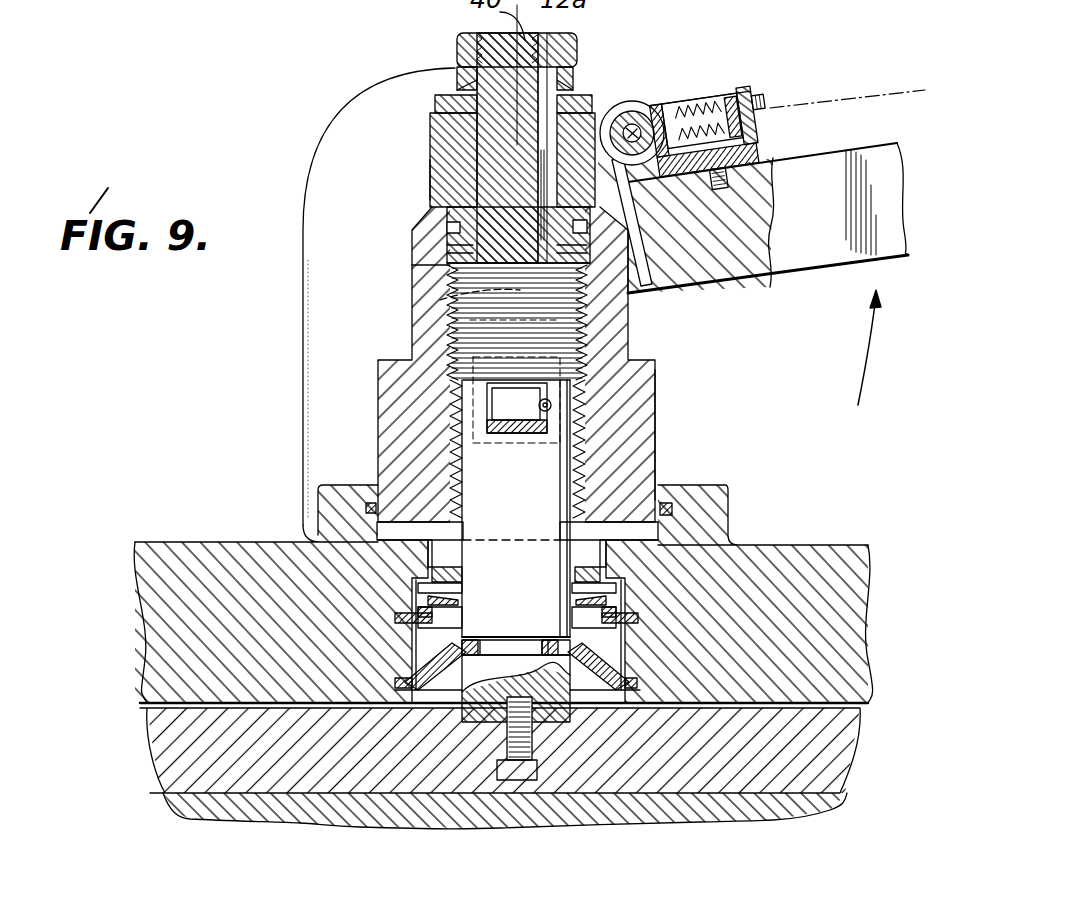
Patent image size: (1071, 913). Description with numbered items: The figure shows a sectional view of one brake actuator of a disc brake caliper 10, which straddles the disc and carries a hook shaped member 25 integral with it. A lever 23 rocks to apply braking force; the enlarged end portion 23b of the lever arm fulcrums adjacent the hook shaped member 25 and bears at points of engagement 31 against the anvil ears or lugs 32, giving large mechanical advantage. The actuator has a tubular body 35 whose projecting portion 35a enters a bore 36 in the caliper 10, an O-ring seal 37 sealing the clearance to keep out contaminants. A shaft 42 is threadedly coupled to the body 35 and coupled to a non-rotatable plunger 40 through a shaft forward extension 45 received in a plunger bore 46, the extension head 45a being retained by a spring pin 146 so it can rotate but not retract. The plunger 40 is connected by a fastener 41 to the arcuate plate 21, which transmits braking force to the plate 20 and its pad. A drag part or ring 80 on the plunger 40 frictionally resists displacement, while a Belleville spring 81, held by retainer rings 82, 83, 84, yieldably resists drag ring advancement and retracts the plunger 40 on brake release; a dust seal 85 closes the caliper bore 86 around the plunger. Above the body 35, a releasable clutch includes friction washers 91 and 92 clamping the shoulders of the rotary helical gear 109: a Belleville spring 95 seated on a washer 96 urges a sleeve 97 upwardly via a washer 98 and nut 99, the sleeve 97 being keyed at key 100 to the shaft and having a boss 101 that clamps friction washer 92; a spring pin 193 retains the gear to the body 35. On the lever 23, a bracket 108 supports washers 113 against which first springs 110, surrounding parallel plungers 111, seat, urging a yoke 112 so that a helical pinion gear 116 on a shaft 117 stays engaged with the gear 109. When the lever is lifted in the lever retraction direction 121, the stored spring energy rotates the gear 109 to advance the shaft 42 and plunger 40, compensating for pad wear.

The caliper 10 is at (200, 545).
The plate 20 is at (185, 805).
The arcuate plate 21 is at (165, 742).
The lever 23 is at (743, 268).
The enlarged end portion of lever arm 23b is at (425, 310).
The hook shaped member 25 is at (315, 288).
The points of engagement 31 is at (520, 352).
The anvil ears or lugs 32 is at (470, 415).
The tubular body 35 is at (378, 400).
The projecting portion of body 35a is at (612, 507).
The bore 36 is at (655, 530).
The O-ring seal 37 is at (672, 509).
The plunger 40 is at (516, 551).
The fastener 41 is at (532, 730).
The shaft 42 is at (465, 322).
The shaft forward extension 45 is at (500, 397).
The extension head 45a is at (512, 433).
The plunger bore 46 is at (500, 420).
The spring pin 146 is at (551, 405).
The drag part or ring 80 is at (434, 570).
The Belleville spring 81 is at (418, 612).
The retainer ring 82 is at (600, 586).
The retainer ring 83 is at (638, 618).
The retainer ring 84 is at (420, 590).
The dust seal 85 is at (600, 655).
The caliper bore 86 is at (413, 645).
The friction washer 91 is at (442, 135).
The friction washer 92 is at (447, 252).
The Belleville spring 95 is at (455, 88).
The washer 96 is at (437, 100).
The sleeve 97 is at (478, 163).
The washer 98 is at (457, 77).
The nut 99 is at (457, 42).
The key 100 is at (547, 222).
The boss 101 is at (432, 275).
The bracket 108 is at (762, 132).
The helical gear 109 is at (442, 165).
The first springs 110 is at (704, 108).
The plungers 111 is at (740, 118).
The yoke 112 is at (668, 103).
The washers 113 is at (762, 103).
The helical pinion gear 116 is at (613, 103).
The shaft 117 is at (632, 128).
The lever retraction direction 121 is at (866, 370).
The spring pin 193 is at (640, 225).